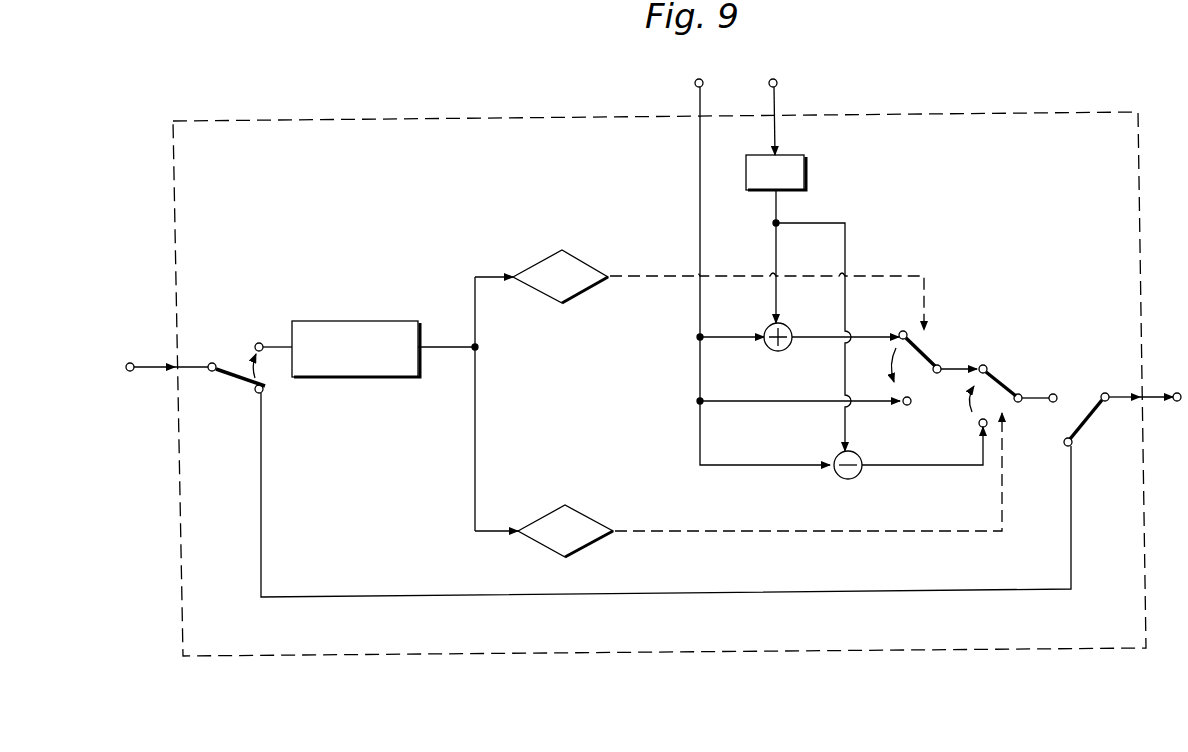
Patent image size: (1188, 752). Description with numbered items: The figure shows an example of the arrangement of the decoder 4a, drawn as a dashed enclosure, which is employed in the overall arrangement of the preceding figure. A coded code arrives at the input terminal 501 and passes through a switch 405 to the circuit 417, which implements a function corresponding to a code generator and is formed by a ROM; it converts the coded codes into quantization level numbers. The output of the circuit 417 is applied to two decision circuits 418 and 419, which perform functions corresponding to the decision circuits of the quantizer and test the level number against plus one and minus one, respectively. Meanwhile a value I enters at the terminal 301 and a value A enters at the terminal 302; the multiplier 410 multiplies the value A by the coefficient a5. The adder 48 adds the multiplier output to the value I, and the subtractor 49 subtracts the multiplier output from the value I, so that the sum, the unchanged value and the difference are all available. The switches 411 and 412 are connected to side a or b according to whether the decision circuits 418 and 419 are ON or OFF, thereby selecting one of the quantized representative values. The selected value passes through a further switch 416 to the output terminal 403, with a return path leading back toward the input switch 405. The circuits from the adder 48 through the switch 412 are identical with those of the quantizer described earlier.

The decoder 4a is at (943, 113).
The code input terminal 501 is at (160, 365).
The changeover switch 405 is at (235, 364).
The circuit 417 is at (352, 320).
The decision circuit 418 is at (577, 256).
The decision circuit 419 is at (578, 508).
The input terminal Ii 301 is at (698, 100).
The input terminal A 302 is at (777, 112).
The multiplier 410 is at (806, 173).
The adder 48 is at (770, 348).
The subtractor 49 is at (838, 475).
The switch 411 is at (923, 353).
The switch 412 is at (1002, 379).
The switch 416 is at (1083, 426).
The output terminal 403 is at (1152, 390).